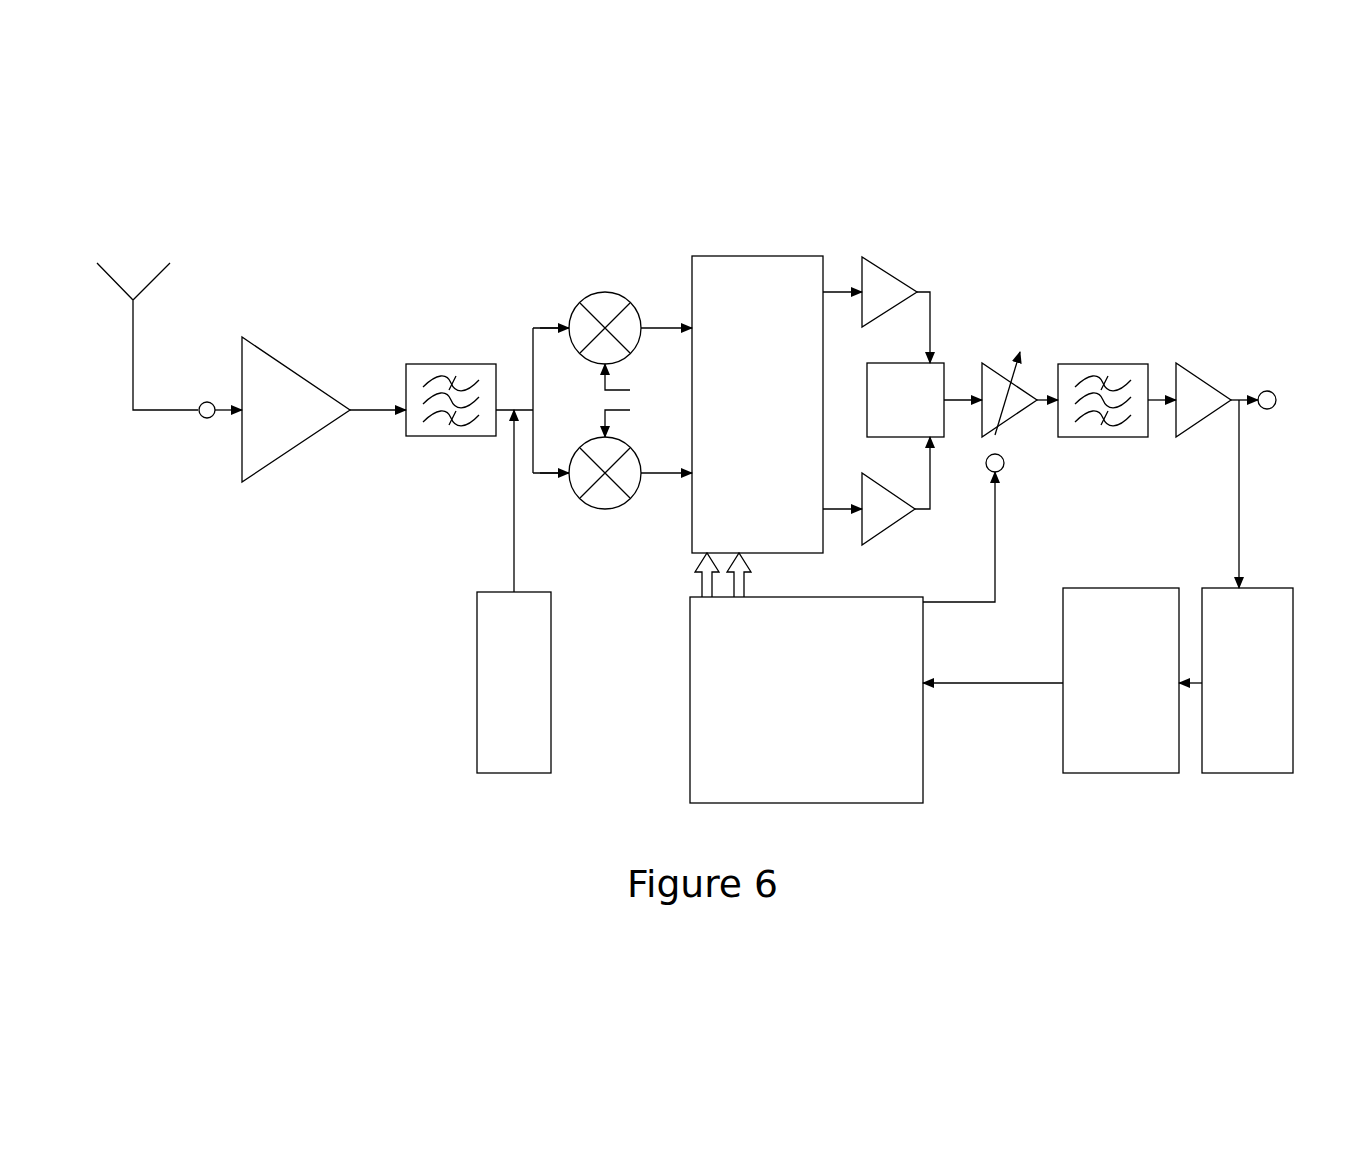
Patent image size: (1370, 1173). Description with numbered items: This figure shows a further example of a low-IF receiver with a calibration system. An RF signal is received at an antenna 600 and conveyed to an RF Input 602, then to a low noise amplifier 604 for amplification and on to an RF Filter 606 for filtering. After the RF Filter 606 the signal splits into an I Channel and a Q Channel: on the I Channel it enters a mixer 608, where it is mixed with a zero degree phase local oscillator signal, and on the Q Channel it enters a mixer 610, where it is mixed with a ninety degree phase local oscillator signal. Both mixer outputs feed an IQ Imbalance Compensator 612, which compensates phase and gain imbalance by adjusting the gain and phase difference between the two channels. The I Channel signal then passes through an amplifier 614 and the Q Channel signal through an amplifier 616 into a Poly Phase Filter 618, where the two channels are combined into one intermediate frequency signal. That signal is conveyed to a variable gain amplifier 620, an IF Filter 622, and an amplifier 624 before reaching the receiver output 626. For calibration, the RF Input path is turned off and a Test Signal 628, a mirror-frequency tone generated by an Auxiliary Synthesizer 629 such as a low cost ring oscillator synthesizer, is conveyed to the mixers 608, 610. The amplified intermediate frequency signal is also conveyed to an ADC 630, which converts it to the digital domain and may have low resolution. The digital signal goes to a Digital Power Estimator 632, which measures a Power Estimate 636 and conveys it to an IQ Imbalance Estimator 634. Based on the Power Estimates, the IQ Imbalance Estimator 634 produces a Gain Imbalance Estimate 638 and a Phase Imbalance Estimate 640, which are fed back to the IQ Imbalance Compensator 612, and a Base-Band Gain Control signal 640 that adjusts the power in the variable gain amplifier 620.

The antenna 600 is at (133, 357).
The RF Input 602 is at (207, 400).
The low noise amplifier 604 is at (285, 366).
The RF Filter 606 is at (452, 437).
The mixer 608 is at (572, 307).
The mixer 610 is at (569, 494).
The IQ Imbalance Compensator 612 is at (798, 255).
The amplifier 614 is at (886, 268).
The amplifier 616 is at (892, 530).
The Poly Phase Filter 618 is at (945, 375).
The variable gain amplifier 620 is at (1017, 430).
The IF Filter 622 is at (1140, 363).
The amplifier 624 is at (1203, 420).
The receiver output 626 is at (1277, 399).
The Test Signal 628 is at (514, 563).
The Auxiliary Synthesizer 629 is at (477, 690).
The analog to digital converter 630 is at (1257, 774).
The Digital Power Estimator 632 is at (1112, 774).
The IQ Imbalance Estimator 634 is at (923, 782).
The Power Estimate 636 is at (977, 680).
The Gain Imbalance Estimate 638 is at (746, 574).
The Phase Imbalance Estimate 640 is at (702, 575).